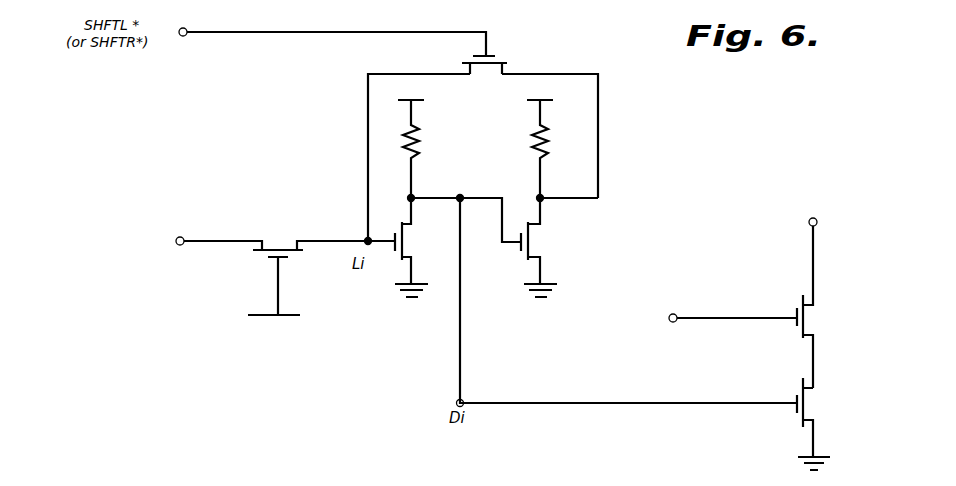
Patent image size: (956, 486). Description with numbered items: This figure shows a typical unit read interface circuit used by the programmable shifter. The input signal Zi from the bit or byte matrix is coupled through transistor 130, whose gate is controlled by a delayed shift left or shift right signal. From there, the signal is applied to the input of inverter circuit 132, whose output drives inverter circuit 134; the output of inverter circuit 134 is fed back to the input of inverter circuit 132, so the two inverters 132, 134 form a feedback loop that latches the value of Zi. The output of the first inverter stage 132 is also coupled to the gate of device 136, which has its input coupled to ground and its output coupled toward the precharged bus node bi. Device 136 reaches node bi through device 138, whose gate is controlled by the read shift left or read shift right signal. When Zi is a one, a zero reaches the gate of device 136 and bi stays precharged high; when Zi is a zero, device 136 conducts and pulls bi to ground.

The transistor 130 is at (265, 254).
The inverter circuit 132 is at (394, 262).
The inverter circuit 134 is at (514, 262).
The device 136 is at (797, 416).
The device 138 is at (797, 304).